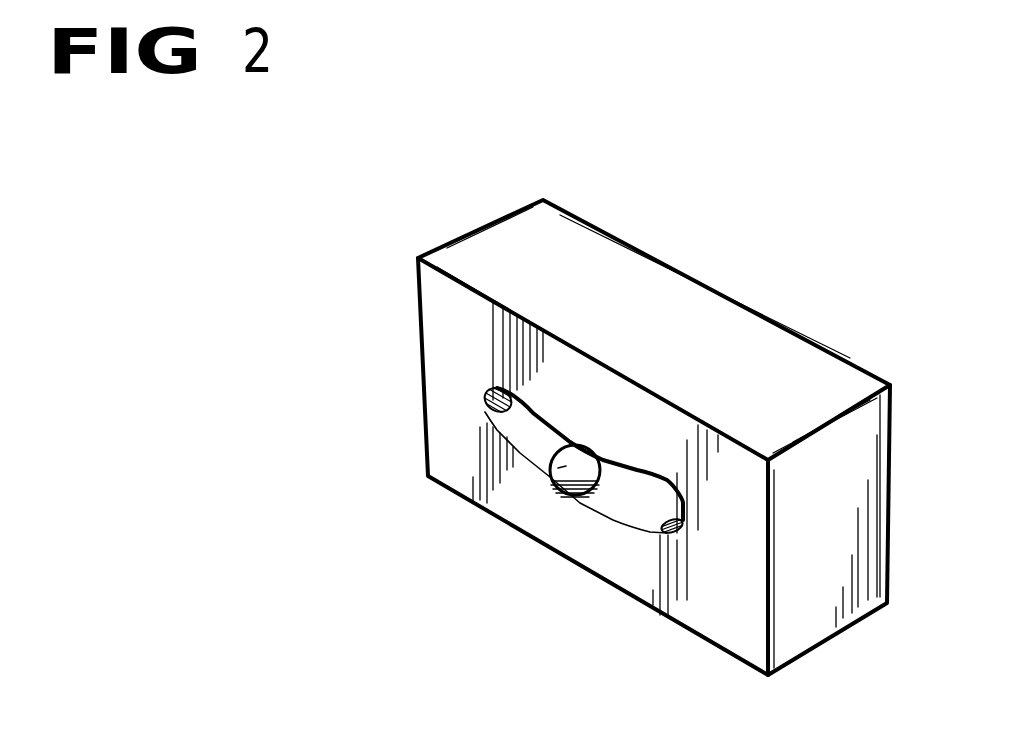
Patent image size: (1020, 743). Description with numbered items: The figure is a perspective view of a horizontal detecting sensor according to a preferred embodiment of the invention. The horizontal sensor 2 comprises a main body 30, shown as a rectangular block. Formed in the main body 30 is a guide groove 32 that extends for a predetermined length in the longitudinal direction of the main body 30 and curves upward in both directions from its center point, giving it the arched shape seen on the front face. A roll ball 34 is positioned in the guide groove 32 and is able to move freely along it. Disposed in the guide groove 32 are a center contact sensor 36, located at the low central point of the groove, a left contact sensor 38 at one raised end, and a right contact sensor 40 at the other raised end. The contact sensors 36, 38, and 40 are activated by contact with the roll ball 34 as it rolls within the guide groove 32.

The horizontal sensor 2 is at (689, 150).
The main body 30 is at (785, 388).
The guide groove 32 is at (632, 470).
The roll ball 34 is at (556, 468).
The center contact sensor 36 is at (580, 500).
The left contact sensor 38 is at (483, 412).
The right contact sensor 40 is at (665, 533).